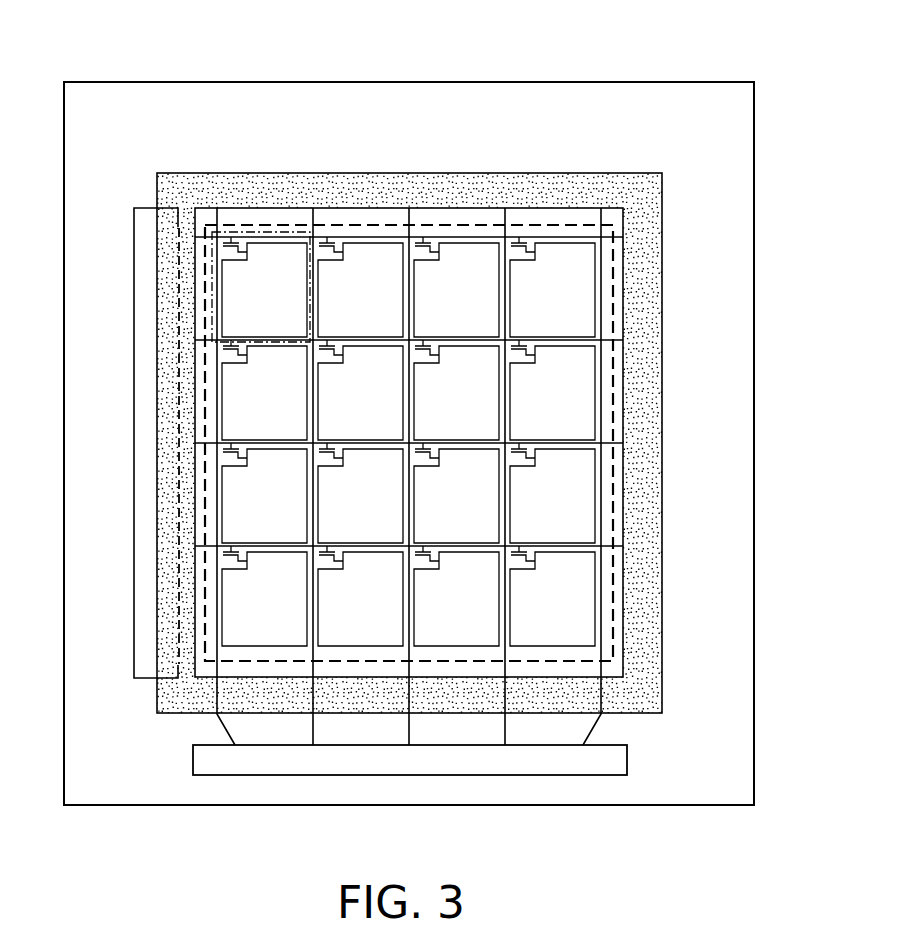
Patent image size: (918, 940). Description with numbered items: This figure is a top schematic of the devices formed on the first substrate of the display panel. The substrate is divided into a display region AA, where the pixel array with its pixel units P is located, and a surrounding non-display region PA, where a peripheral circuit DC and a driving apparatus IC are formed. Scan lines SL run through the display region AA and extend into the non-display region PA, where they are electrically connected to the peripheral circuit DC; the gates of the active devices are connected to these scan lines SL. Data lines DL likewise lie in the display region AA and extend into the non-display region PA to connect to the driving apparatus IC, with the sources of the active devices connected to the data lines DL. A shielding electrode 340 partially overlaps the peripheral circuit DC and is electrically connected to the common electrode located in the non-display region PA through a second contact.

The non-display region PA is at (129, 126).
The data lines DL is at (181, 250).
The pixel units P is at (280, 228).
The display region AA is at (592, 226).
The scan lines SL is at (622, 210).
The peripheral circuit DC is at (137, 330).
The shielding electrode 340 is at (647, 375).
The driving apparatus IC is at (540, 760).